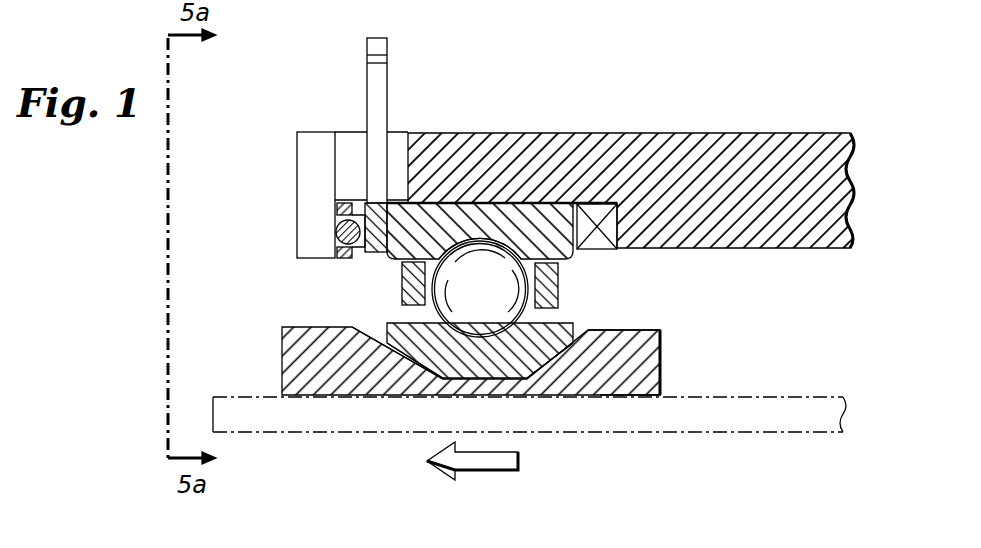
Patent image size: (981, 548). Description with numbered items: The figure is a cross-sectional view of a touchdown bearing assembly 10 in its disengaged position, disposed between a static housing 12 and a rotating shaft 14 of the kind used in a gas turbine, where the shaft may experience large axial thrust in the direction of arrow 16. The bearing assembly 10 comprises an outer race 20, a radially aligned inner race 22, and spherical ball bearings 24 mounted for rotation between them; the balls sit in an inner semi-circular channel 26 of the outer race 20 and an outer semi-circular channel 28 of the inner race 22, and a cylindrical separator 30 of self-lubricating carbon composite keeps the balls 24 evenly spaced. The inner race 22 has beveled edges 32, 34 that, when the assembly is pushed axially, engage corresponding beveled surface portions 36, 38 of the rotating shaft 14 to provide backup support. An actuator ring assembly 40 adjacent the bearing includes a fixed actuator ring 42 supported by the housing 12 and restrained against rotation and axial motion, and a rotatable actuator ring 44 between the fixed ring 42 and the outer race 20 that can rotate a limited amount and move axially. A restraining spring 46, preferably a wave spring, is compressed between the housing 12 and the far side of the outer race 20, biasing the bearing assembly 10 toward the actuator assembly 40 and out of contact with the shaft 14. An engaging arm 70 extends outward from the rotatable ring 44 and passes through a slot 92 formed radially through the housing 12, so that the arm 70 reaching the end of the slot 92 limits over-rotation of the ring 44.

The touchdown bearing assembly 10 is at (702, 291).
The static housing 12 is at (660, 147).
The rotating shaft 14 is at (638, 385).
The arrow 16 is at (503, 471).
The outer race 20 is at (485, 205).
The inner race 22 is at (556, 326).
The spherical ball bearings 24 is at (450, 300).
The inner semi-circular channel 26 is at (527, 222).
The outer semi-circular channel 28 is at (455, 332).
The cylindrical separator 30 is at (402, 278).
The beveled edge 32 is at (392, 352).
The beveled edge 34 is at (583, 341).
The beveled surface portion 36 is at (400, 355).
The beveled surface portion 38 is at (547, 348).
The actuator ring assembly 40 is at (320, 230).
The fixed actuator ring 42 is at (303, 175).
The rotatable actuator ring 44 is at (368, 250).
The restraining spring 46 is at (607, 222).
The engaging arm 70 is at (367, 105).
The slot 92 is at (352, 140).